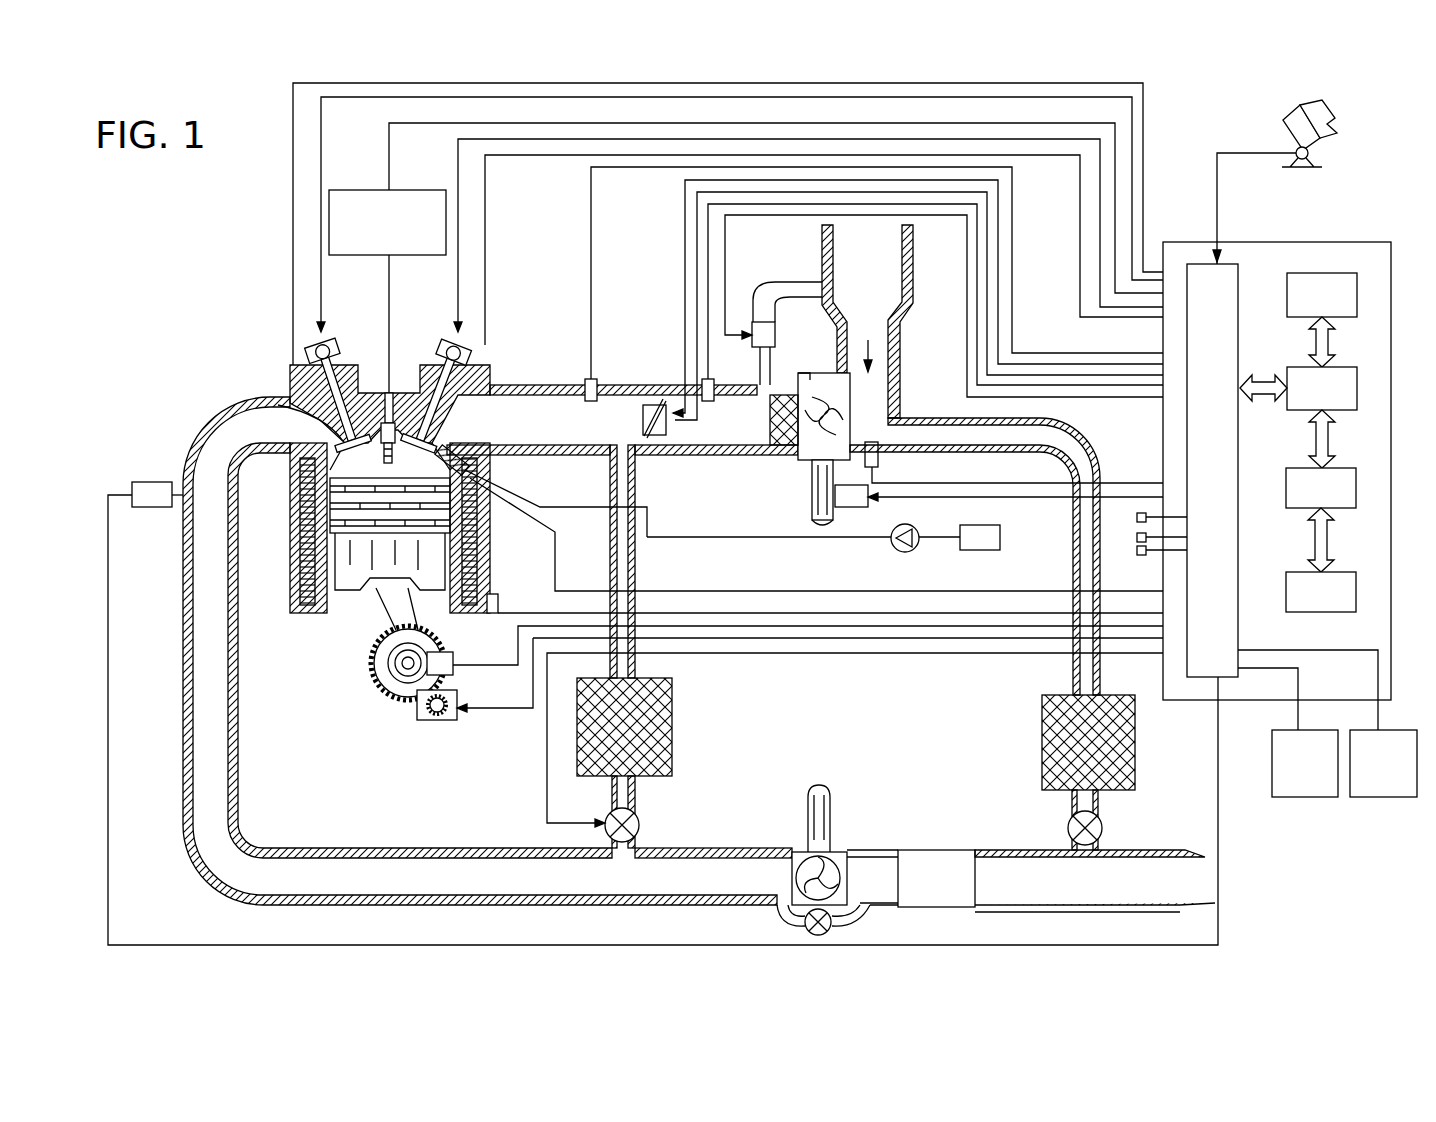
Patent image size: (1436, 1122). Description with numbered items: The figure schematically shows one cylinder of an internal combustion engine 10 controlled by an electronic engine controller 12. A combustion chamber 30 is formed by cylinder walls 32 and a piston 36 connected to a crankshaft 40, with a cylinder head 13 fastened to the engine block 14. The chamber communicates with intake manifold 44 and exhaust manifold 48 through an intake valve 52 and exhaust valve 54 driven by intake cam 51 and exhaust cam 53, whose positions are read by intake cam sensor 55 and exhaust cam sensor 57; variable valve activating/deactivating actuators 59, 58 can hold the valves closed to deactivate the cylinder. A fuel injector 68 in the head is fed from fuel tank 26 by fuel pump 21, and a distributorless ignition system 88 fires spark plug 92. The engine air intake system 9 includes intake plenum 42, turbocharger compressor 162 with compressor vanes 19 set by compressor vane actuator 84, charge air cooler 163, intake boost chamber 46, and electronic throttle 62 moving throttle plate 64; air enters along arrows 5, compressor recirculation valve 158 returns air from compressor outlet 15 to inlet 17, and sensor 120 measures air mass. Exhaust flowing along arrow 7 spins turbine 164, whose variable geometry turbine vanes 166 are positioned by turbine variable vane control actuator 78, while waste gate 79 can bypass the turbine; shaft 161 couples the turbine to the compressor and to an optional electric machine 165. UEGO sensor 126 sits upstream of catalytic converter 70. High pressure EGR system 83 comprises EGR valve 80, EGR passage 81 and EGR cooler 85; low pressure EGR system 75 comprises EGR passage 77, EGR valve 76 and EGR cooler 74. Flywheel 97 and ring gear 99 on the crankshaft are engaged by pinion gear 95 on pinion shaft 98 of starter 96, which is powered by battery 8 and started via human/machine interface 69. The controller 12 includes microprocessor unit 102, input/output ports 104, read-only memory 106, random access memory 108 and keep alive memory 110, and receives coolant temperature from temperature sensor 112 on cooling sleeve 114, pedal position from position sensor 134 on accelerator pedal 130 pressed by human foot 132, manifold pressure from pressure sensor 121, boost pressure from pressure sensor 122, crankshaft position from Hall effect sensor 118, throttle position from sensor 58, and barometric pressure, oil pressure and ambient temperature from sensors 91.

The arrows 5 is at (605, 416).
The arrow 7 is at (365, 875).
The battery 8 is at (1327, 723).
The engine air intake system 9 is at (662, 300).
The internal combustion engine 10 is at (222, 315).
The electronic engine controller 12 is at (1350, 242).
The cylinder head 13 is at (487, 372).
The engine block 14 is at (300, 472).
The outlet 15 is at (786, 380).
The inlet 17 is at (850, 400).
The compressor vanes 19 is at (845, 430).
The fuel pump 21 is at (912, 528).
The fuel tank 26 is at (969, 547).
The combustion chamber 30 is at (370, 467).
The cylinder walls 32 is at (345, 598).
The piston 36 is at (385, 555).
The crankshaft 40 is at (392, 683).
The intake plenum 42 is at (849, 293).
The intake manifold 44 is at (600, 416).
The intake boost chamber 46 is at (694, 430).
The exhaust manifold 48 is at (268, 435).
The intake cam 51 is at (457, 335).
The intake valve 52 is at (425, 440).
The exhaust cam 53 is at (325, 338).
The exhaust valve 54 is at (300, 405).
The intake cam sensor 55 is at (470, 355).
The exhaust cam sensor 57 is at (305, 350).
The variable valve activating/deactivating actuator 58 is at (338, 348).
The variable valve activating/deactivating actuator 59 is at (448, 345).
The electronic throttle 62 is at (652, 404).
The throttle plate 64 is at (660, 398).
The fuel injector 68 is at (485, 490).
The human/machine interface 69 is at (1288, 732).
The catalytic converter 70 is at (1031, 881).
The EGR cooler 74 is at (1135, 732).
The low pressure EGR system 75 is at (995, 772).
The EGR valve 76 is at (1100, 825).
The EGR passage 77 is at (1090, 520).
The turbine variable vane control actuator 78 is at (840, 852).
The waste gate 79 is at (832, 922).
The EGR valve 80 is at (606, 812).
The EGR passage 81 is at (612, 490).
The high pressure EGR system 83 is at (520, 795).
The compressor vane actuator 84 is at (798, 385).
The EGR cooler 85 is at (672, 715).
The distributorless ignition system 88 is at (348, 190).
The sensors 91 is at (1137, 551).
The spark plug 92 is at (385, 398).
The pinion gear 95 is at (437, 716).
The starter 96 is at (450, 720).
The flywheel 97 is at (372, 676).
The pinion shaft 98 is at (430, 712).
The ring gear 99 is at (402, 700).
The microprocessor unit 102 is at (1357, 385).
The input/output ports 104 is at (1242, 274).
The read-only memory 106 is at (1357, 292).
The random access memory 108 is at (1356, 488).
The keep alive memory 110 is at (1356, 588).
The temperature sensor 112 is at (496, 596).
The cooling sleeve 114 is at (300, 527).
The Hall effect sensor 118 is at (452, 655).
The sensor 120 is at (878, 462).
The pressure sensor 121 is at (588, 378).
The pressure sensor 122 is at (712, 378).
The UEGO sensor 126 is at (132, 486).
The accelerator pedal 130 is at (1283, 128).
The human foot 132 is at (1335, 118).
The position sensor 134 is at (1320, 162).
The compressor recirculation valve 158 is at (752, 325).
The shaft 161 is at (812, 515).
The turbocharger compressor 162 is at (812, 470).
The charge air cooler 163 is at (785, 455).
The turbine 164 is at (795, 850).
The electric machine 165 is at (840, 507).
The variable geometry turbine vanes 166 is at (842, 882).